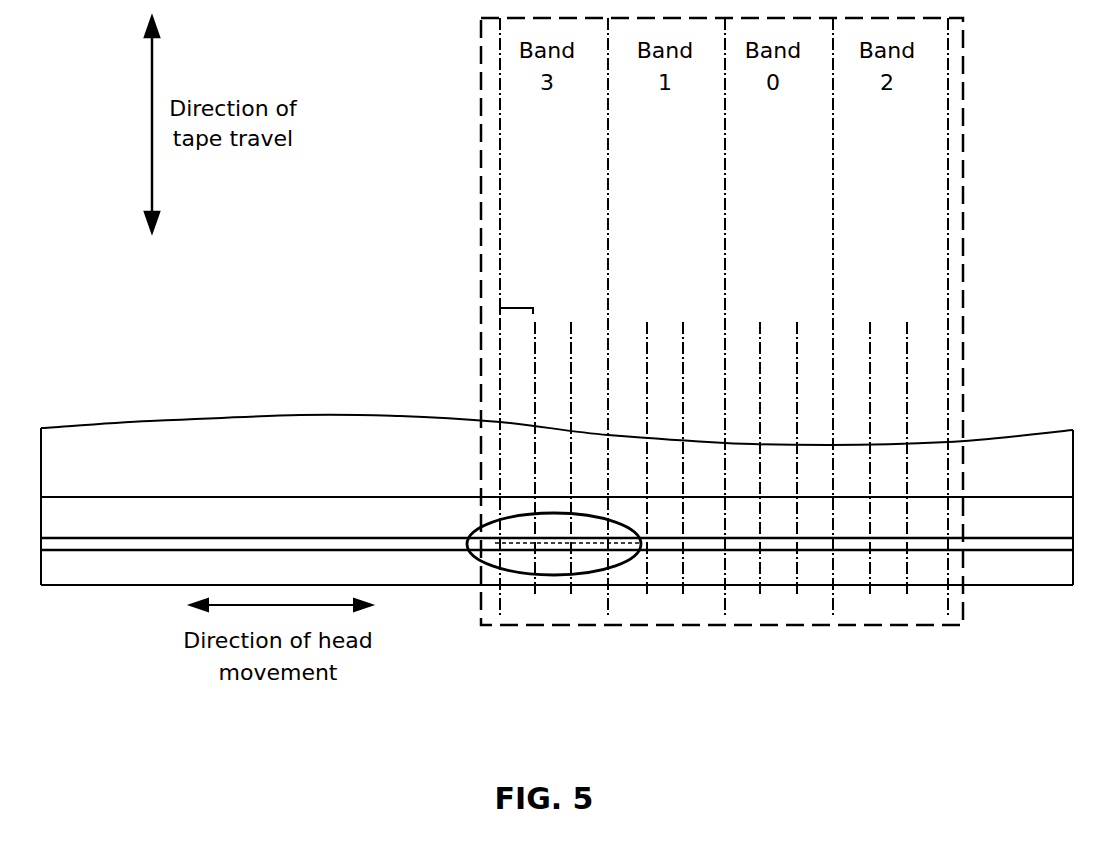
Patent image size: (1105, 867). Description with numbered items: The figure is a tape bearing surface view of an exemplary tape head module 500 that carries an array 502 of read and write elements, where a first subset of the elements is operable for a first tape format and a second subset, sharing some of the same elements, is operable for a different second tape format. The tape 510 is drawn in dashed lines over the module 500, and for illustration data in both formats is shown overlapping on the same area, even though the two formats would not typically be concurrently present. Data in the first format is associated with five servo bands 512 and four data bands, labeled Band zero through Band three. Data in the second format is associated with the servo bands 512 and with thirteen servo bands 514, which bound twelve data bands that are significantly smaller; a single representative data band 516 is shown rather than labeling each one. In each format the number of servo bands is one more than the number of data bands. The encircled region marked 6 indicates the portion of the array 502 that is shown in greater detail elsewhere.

The module 500 is at (66, 428).
The array of elements 502 is at (548, 553).
The tape 510 is at (480, 118).
The servo bands 512 is at (608, 233).
The servo bands 514 is at (570, 382).
The data band 516 is at (518, 303).
The detail region shown in FIG. 6 is at (479, 569).